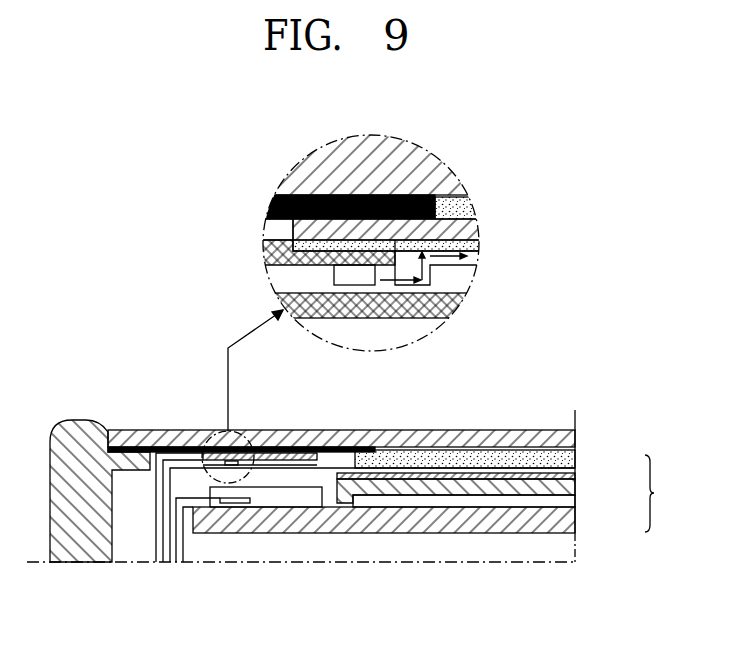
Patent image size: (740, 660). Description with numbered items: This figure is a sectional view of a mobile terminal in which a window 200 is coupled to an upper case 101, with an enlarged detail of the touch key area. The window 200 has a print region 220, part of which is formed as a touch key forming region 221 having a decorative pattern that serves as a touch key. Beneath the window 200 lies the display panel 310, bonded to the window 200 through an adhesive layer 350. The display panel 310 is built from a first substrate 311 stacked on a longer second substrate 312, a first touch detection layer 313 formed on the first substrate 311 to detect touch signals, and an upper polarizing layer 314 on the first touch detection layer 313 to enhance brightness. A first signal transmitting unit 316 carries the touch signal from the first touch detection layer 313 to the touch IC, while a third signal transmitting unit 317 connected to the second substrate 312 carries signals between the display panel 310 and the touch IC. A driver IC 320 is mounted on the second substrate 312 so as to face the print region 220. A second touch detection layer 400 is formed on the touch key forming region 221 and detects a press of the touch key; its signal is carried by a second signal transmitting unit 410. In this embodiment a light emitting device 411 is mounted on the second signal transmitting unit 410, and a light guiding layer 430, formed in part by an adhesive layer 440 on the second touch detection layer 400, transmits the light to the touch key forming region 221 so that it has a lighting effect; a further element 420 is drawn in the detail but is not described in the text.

The upper case 101 is at (67, 430).
The window 200 is at (452, 172).
The print region 220 is at (268, 203).
The touch key forming region 221 is at (472, 203).
The display panel 310 is at (666, 493).
The first substrate 311 is at (577, 493).
The second substrate 312 is at (577, 516).
The first touch detection layer 313 is at (577, 479).
The upper polarizing layer 314 is at (577, 470).
The first signal transmitting unit 316 is at (465, 301).
The third signal transmitting unit 317 is at (183, 546).
The driver IC 320 is at (275, 492).
The adhesive layer 350 is at (577, 450).
The second touch detection layer 400 is at (479, 229).
The second signal transmitting unit 410 is at (268, 258).
The light emitting device 411 is at (355, 285).
The guide member 420 is at (270, 237).
The light guiding layer 430 is at (479, 258).
The adhesive layer 440 is at (479, 246).